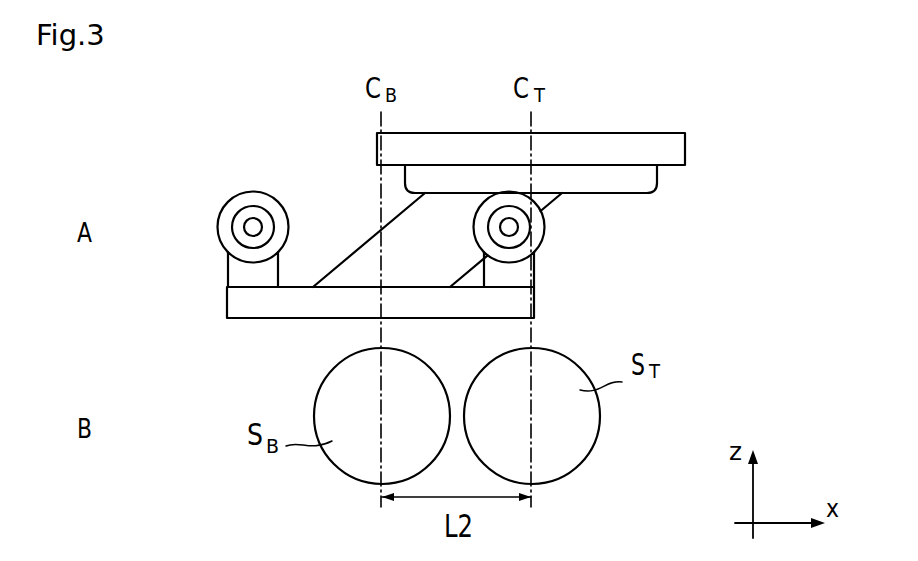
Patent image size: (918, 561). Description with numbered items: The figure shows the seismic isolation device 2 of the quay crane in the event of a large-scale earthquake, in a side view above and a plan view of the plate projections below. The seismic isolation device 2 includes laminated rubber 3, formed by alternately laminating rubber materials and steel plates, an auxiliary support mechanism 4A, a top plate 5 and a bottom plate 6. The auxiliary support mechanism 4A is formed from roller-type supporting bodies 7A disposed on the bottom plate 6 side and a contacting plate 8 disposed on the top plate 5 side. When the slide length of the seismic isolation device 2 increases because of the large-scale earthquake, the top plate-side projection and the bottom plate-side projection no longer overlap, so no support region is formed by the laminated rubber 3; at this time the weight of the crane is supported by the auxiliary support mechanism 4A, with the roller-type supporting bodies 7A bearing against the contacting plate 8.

The seismic isolation device 2 is at (150, 141).
The laminated rubber 3 is at (363, 260).
The auxiliary support mechanism 4A is at (703, 286).
The top plate 5 is at (673, 150).
The bottom plate 6 is at (265, 308).
The roller-type supporting bodies 7A is at (240, 262).
The contacting plate 8 is at (618, 185).